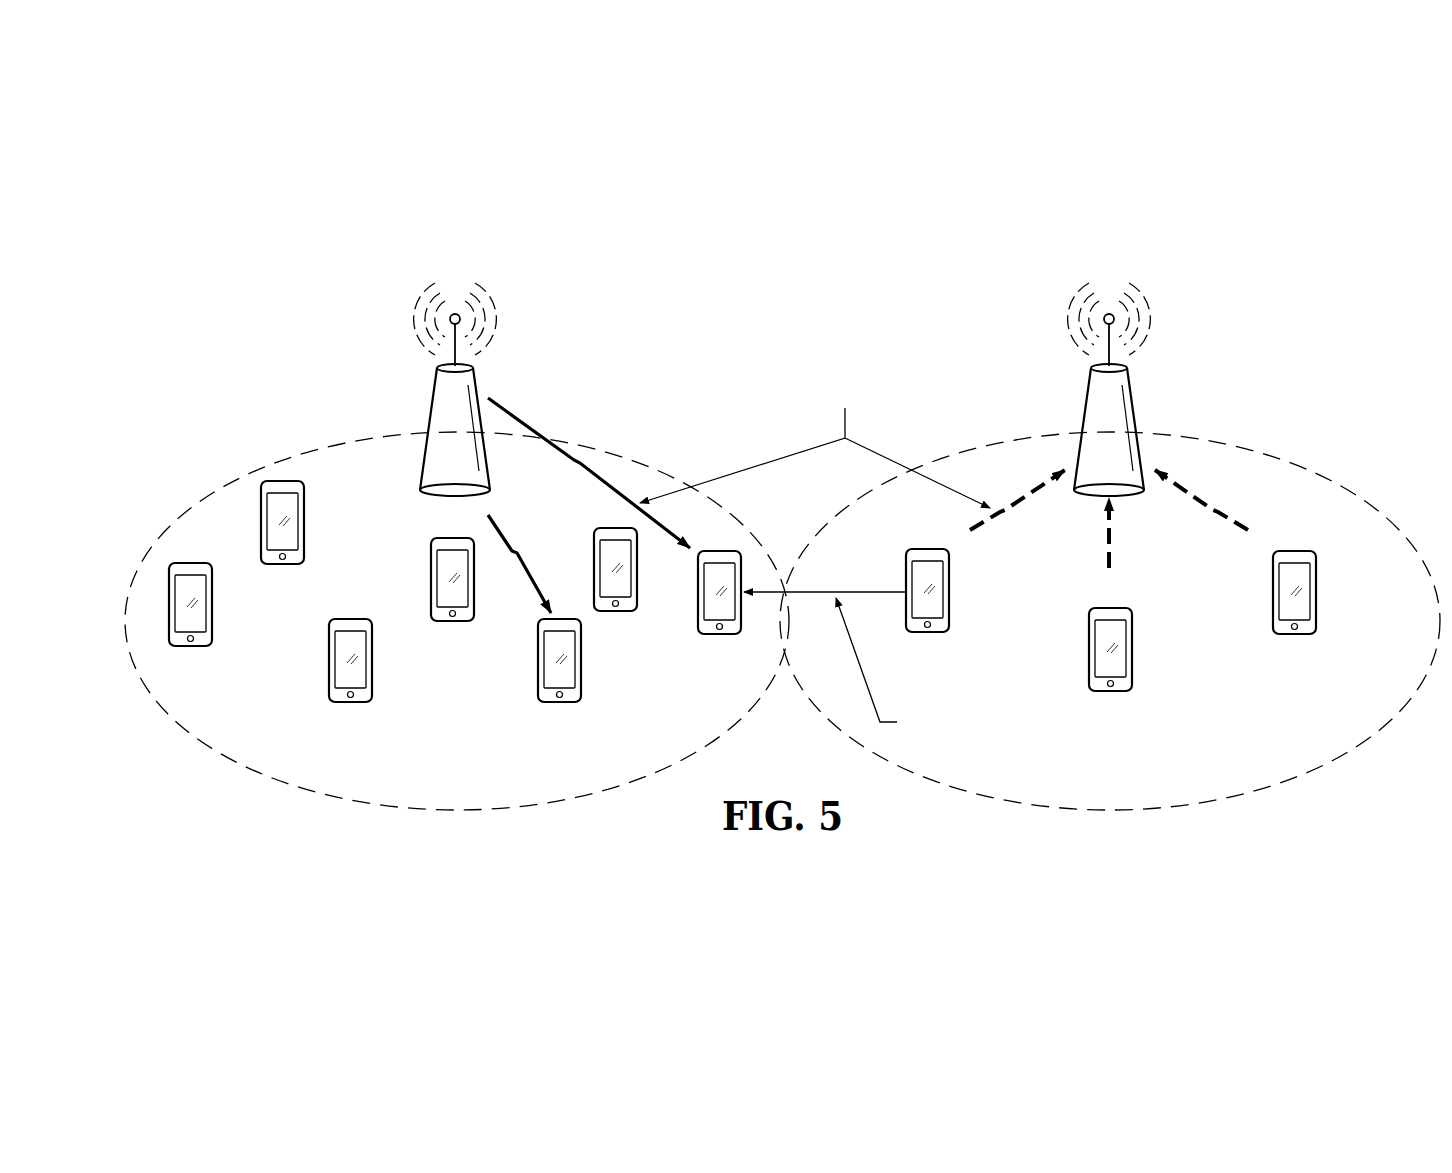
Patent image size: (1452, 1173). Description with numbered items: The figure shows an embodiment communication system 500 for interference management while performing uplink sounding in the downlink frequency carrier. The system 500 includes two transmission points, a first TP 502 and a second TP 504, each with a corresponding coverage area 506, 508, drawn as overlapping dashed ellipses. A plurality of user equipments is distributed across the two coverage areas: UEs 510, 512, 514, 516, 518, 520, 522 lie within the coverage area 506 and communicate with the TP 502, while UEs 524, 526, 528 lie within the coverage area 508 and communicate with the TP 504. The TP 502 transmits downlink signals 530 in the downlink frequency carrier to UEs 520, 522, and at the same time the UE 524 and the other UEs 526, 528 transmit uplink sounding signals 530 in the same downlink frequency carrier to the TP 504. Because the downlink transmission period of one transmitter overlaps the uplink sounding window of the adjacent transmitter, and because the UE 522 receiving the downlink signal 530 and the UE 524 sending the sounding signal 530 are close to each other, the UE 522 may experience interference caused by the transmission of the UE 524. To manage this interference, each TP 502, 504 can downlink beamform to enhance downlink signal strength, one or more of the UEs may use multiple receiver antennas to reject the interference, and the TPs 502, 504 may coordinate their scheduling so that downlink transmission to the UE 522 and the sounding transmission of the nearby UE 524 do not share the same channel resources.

The communication system 500 is at (1008, 280).
The transmission point (TP) 502 is at (428, 410).
The transmission point (TP) 504 is at (1136, 410).
The coverage area 506 is at (260, 462).
The coverage area 508 is at (1305, 462).
The user equipment (UE) 510 is at (282, 565).
The user equipment (UE) 512 is at (190, 647).
The user equipment (UE) 514 is at (350, 702).
The user equipment (UE) 516 is at (452, 622).
The user equipment (UE) 518 is at (615, 612).
The user equipment (UE) 520 is at (559, 703).
The user equipment (UE) 522 is at (719, 635).
The user equipment (UE) 524 is at (927, 635).
The user equipment (UE) 526 is at (1110, 693).
The user equipment (UE) 528 is at (1294, 635).
The signal (DL/UL) 530 is at (1246, 532).